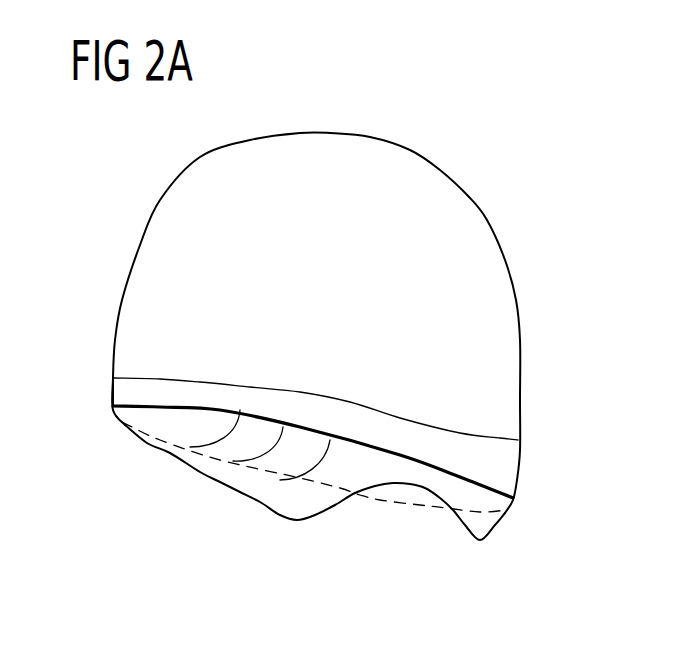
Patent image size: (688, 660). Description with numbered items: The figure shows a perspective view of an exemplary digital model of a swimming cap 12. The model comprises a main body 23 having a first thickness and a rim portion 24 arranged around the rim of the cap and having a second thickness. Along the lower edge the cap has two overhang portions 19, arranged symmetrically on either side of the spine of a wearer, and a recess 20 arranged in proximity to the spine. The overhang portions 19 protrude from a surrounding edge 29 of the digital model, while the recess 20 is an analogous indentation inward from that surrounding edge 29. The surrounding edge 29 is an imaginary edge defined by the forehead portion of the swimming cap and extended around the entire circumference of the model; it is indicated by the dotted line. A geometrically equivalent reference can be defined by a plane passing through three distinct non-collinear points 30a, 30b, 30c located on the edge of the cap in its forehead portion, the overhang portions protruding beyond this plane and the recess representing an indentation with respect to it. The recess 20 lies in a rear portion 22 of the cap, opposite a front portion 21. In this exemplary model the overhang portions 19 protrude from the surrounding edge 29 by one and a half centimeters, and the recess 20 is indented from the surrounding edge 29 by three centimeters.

The swimming cap 12 is at (150, 190).
The overhang portions 19 is at (295, 512).
The recess 20 is at (403, 493).
The front portion 21 is at (163, 392).
The rear portion 22 is at (442, 548).
The main body 23 is at (428, 385).
The rim portion 24 is at (463, 462).
The surrounding edge 29 is at (358, 495).
The first non-collinear point 30a is at (190, 447).
The second non-collinear point 30b is at (233, 461).
The third non-collinear point 30c is at (280, 480).